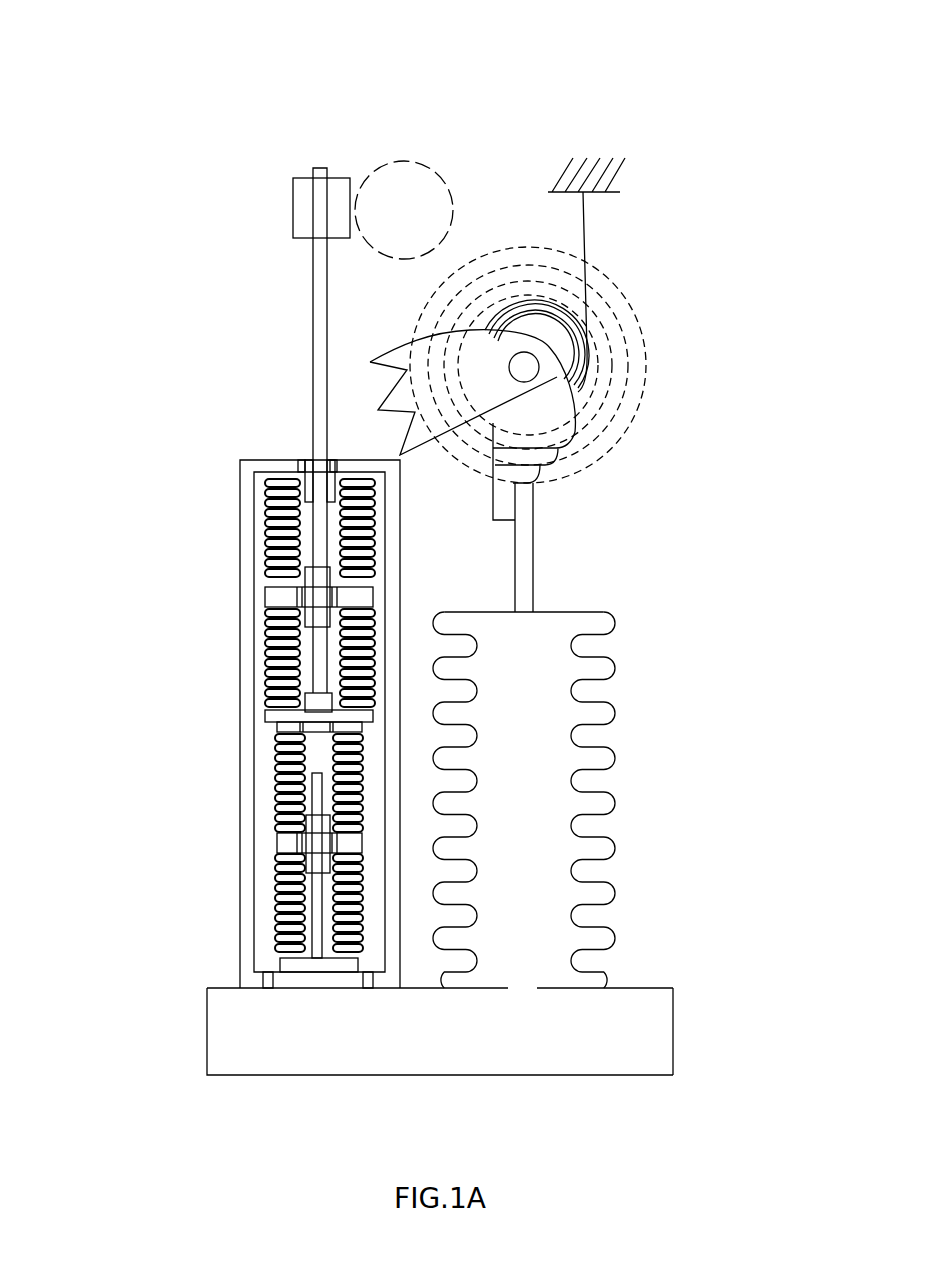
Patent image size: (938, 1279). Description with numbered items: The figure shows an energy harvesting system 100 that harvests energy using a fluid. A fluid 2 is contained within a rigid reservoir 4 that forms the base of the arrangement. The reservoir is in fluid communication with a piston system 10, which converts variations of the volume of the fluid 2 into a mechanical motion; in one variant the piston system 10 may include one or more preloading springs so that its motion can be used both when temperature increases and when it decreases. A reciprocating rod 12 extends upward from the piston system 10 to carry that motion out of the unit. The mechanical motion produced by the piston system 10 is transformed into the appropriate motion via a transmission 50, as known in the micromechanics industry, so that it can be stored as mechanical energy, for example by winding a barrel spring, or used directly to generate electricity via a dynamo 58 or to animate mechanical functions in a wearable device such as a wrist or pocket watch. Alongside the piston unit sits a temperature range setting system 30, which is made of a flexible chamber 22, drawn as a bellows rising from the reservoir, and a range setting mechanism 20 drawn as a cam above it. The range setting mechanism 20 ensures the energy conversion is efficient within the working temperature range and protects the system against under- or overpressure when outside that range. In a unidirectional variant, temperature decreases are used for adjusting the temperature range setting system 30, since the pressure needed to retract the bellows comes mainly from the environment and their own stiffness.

The energy harvesting system 100 is at (148, 55).
The fluid 2 is at (222, 1035).
The rigid reservoir 4 is at (675, 1036).
The piston system 10 is at (180, 626).
The reciprocating rod 12 is at (295, 353).
The transmission 50 is at (300, 207).
The dynamo 58 is at (424, 157).
The temperature range setting system 30 is at (772, 247).
The range setting mechanism 20 is at (672, 470).
The flexible chamber 22 is at (538, 755).